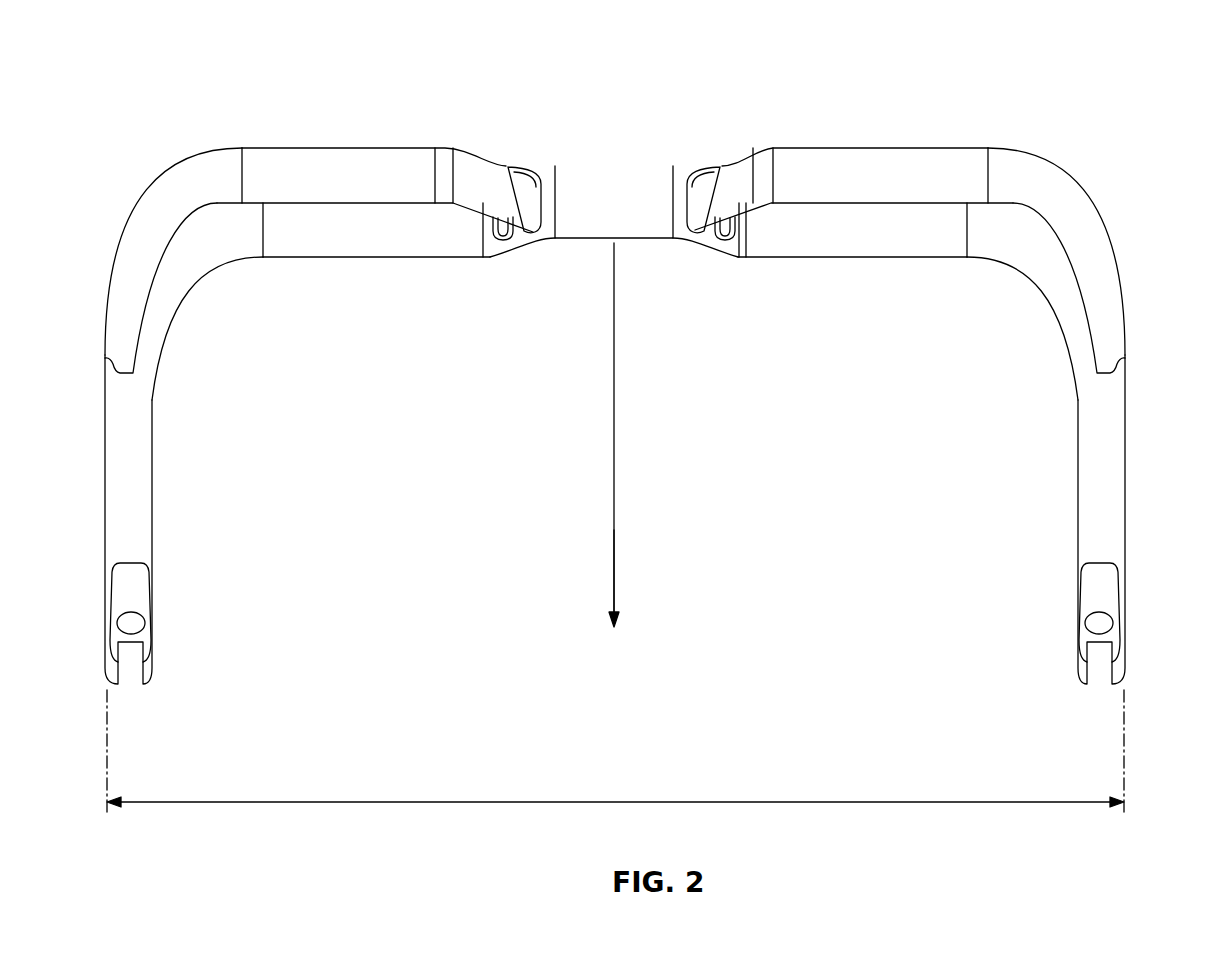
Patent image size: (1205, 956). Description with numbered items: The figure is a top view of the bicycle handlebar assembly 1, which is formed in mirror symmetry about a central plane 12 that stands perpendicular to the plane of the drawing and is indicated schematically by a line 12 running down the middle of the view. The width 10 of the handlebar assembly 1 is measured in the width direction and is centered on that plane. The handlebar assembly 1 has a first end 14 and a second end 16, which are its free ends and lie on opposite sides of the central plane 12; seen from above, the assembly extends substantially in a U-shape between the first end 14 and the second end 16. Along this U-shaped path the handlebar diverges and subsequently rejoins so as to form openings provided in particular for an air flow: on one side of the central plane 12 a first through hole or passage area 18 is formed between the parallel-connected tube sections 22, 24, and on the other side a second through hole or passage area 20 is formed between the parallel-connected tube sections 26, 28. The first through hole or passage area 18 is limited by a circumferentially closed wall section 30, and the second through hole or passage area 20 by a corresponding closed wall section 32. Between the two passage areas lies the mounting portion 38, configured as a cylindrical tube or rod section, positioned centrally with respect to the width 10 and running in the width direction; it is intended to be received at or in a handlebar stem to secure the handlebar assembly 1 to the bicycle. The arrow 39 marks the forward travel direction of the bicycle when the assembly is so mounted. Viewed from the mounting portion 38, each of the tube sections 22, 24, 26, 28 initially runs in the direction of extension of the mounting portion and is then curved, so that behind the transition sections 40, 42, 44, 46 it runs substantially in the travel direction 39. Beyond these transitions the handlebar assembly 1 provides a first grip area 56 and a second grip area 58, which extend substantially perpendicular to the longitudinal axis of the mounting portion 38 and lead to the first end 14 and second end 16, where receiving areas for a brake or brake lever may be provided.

The handlebar assembly 1 is at (120, 76).
The width 10 is at (367, 803).
The central plane 12 is at (615, 398).
The first end 14 is at (145, 683).
The second end 16 is at (1118, 683).
The first through hole or passage area 18 is at (321, 306).
The second through hole or passage area 20 is at (884, 245).
The tube section 22 is at (418, 157).
The tube section 24 is at (420, 245).
The tube section 26 is at (907, 157).
The tube section 28 is at (922, 243).
The wall section 30 is at (357, 243).
The wall section 32 is at (733, 254).
The mounting portion 38 is at (640, 180).
The arrow 39 is at (610, 542).
The transition section 40 is at (160, 202).
The transition section 42 is at (190, 267).
The transition section 44 is at (1074, 205).
The transition section 46 is at (1047, 272).
The first grip area 56 is at (137, 487).
The second grip area 58 is at (1097, 475).